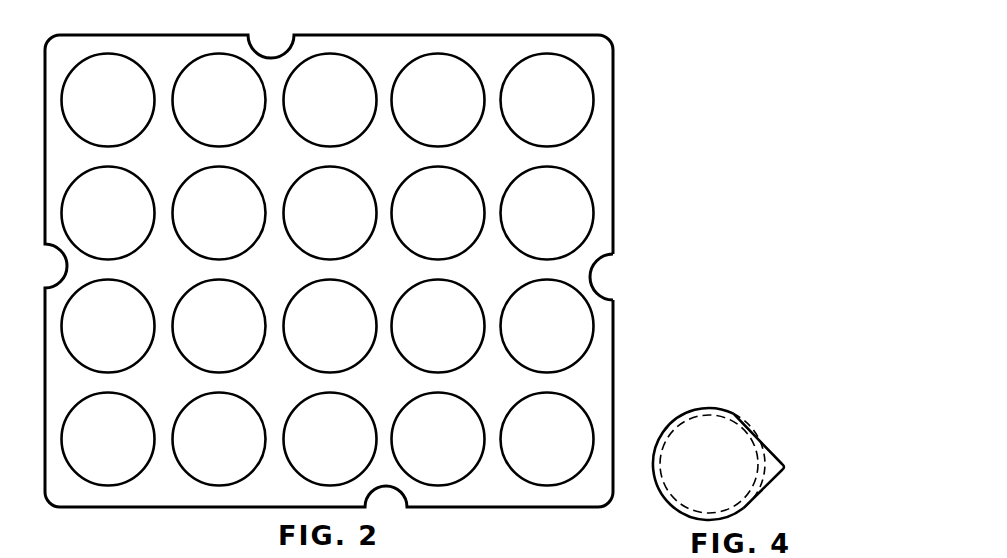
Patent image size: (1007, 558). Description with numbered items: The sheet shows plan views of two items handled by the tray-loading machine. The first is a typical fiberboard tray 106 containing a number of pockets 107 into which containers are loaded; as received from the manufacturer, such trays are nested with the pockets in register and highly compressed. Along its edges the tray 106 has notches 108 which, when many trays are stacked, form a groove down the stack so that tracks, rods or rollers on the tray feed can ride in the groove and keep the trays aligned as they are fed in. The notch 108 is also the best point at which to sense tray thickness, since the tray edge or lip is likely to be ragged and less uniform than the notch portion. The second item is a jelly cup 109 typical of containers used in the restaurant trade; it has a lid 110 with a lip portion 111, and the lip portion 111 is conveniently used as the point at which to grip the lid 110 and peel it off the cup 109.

In FIG. 2, the fiberboard tray 106 is at (493, 50).
In FIG. 2, the pockets 107 is at (572, 112).
In FIG. 2, the notches 108 is at (605, 255).
In FIG. 4, the jelly cup 109 is at (744, 413).
In FIG. 4, the lid 110 is at (688, 478).
In FIG. 4, the lip portion 111 is at (786, 471).